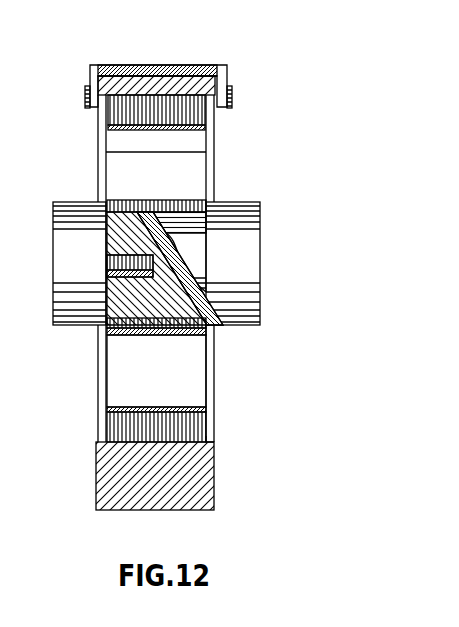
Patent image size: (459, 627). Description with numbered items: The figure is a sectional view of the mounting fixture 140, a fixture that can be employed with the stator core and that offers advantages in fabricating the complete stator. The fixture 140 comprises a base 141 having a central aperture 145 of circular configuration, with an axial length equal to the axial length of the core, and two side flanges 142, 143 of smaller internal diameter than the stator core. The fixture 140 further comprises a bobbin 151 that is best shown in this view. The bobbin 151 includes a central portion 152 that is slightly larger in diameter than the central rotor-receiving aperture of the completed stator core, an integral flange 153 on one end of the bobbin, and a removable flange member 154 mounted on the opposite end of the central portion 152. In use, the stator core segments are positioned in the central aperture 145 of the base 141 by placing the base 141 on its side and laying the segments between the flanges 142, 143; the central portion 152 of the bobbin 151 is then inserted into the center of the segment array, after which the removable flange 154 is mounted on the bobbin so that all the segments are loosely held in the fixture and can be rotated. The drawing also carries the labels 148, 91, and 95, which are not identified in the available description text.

The mounting fixture 140 is at (170, 45).
The end cap 148 is at (208, 65).
The upper coil winding 91 is at (214, 130).
The central aperture 145 is at (203, 182).
The bobbin 151 is at (190, 252).
The central portion 152 is at (170, 313).
The integral flange 153 is at (250, 267).
The removable flange member 154 is at (67, 281).
The sleeve 95 is at (193, 373).
The side flange 142 is at (102, 440).
The side flange 143 is at (212, 442).
The base 141 is at (103, 482).